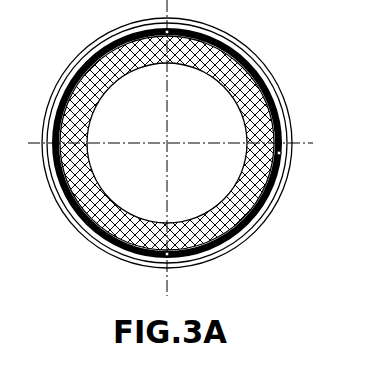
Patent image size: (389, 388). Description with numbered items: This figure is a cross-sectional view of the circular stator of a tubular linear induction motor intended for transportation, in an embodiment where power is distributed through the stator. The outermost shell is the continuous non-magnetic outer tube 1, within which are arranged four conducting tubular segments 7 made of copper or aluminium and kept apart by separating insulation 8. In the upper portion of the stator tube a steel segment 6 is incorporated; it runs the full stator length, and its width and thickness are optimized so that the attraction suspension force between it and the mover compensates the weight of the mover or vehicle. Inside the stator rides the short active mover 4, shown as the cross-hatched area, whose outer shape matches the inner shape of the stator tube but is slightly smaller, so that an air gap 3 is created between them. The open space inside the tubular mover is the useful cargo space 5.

The non-magnetic outer tube 1 is at (215, 32).
The air gap 3 is at (278, 128).
The active mover 4 is at (267, 182).
The cargo space 5 is at (198, 212).
The steel segment 6 is at (265, 63).
The conducting tubular segments 7 is at (272, 95).
The separating insulation 8 is at (280, 155).